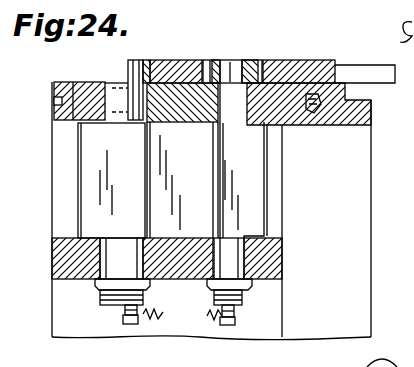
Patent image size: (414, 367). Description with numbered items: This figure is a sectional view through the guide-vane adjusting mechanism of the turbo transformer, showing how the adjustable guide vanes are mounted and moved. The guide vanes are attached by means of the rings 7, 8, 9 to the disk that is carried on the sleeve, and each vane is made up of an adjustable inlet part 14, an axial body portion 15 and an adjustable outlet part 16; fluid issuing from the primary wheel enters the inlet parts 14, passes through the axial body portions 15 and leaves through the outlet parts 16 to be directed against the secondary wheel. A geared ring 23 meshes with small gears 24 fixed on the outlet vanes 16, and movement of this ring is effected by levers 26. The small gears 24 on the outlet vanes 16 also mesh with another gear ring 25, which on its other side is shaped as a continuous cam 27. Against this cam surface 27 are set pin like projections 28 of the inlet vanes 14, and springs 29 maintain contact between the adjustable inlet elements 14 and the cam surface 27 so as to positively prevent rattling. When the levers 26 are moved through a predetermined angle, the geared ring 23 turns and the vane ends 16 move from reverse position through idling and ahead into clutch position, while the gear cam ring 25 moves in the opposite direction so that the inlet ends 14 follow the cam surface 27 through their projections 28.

The ring 7 is at (78, 82).
The ring 8 is at (204, 122).
The ring 9 is at (308, 114).
The inlet parts of the guide vanes 14 is at (111, 180).
The axial body portions of the guide vanes 15 is at (182, 180).
The outlet parts of the guide vanes 16 is at (243, 149).
The geared ring 23 is at (285, 66).
The gears 24 is at (218, 62).
The gear ring 25 is at (180, 59).
The levers 26 is at (356, 70).
The cam surface 27 is at (148, 62).
The pin like projections 28 is at (128, 67).
The springs 29 is at (207, 316).